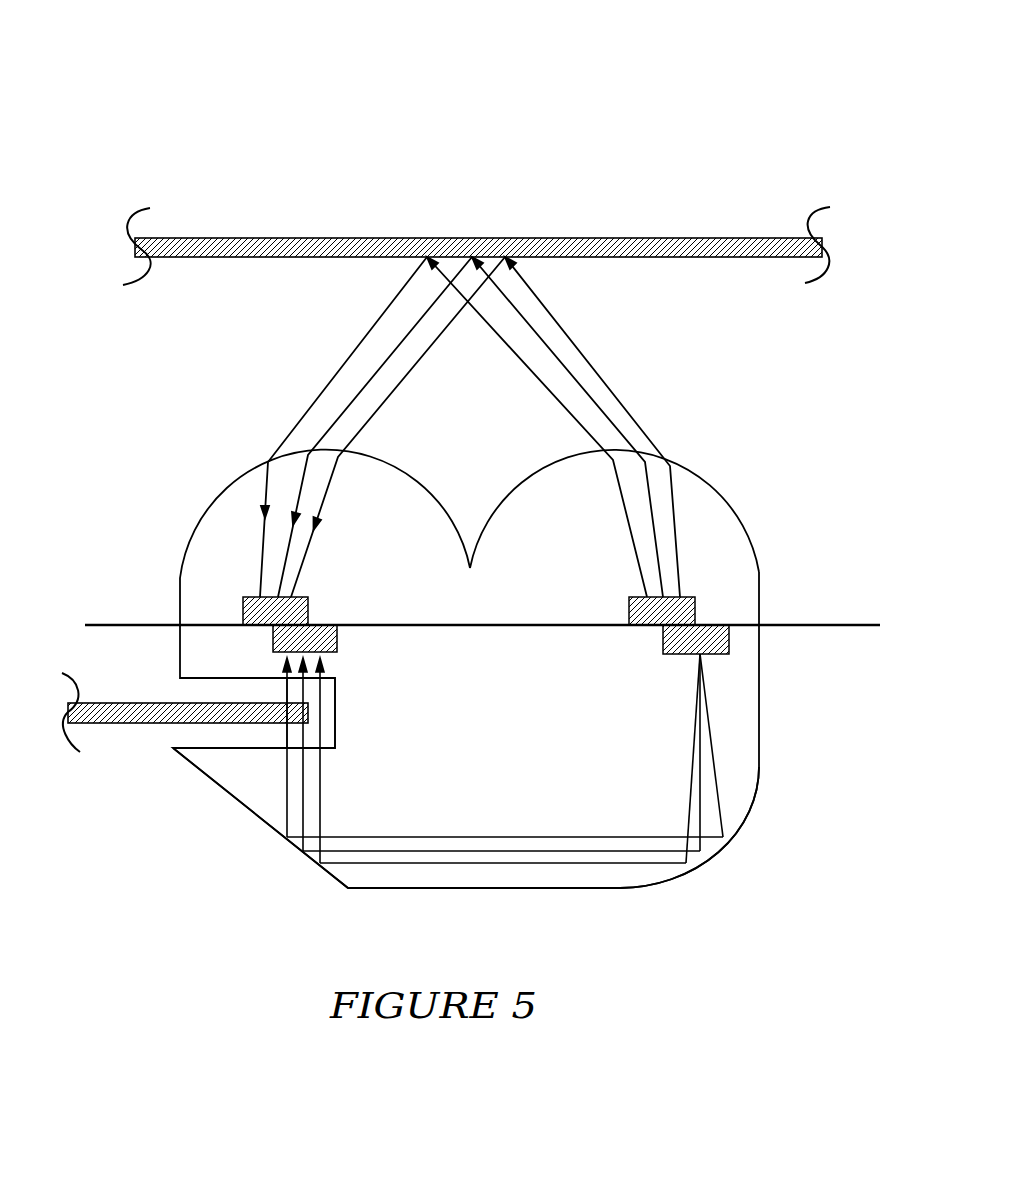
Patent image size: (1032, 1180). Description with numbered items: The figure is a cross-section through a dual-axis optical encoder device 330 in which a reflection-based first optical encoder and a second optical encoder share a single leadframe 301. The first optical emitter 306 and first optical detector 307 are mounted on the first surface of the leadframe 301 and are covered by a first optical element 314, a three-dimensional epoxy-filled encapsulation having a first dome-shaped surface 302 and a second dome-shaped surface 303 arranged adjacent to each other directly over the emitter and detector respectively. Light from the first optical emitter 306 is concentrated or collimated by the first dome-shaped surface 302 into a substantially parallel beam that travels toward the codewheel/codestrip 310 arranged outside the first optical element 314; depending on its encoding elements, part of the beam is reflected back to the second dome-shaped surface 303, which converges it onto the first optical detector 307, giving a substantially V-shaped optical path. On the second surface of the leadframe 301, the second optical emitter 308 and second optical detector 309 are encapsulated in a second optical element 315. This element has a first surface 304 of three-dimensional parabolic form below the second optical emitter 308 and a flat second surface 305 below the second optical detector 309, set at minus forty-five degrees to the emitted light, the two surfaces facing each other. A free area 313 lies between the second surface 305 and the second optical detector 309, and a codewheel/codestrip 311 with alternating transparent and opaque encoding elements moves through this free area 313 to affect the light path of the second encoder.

The optical encoder device 330 is at (755, 122).
The codewheel/codestrip 310 is at (652, 238).
The first optical element 314 is at (732, 555).
The second dome-shaped surface 303 is at (257, 468).
The first dome-shaped surface 302 is at (738, 508).
The leadframe 301 is at (840, 625).
The first optical detector 307 is at (258, 597).
The second optical detector 309 is at (338, 637).
The first optical emitter 306 is at (630, 605).
The second optical emitter 308 is at (663, 646).
The codewheel/codestrip 311 is at (118, 725).
The free area 313 is at (325, 712).
The second surface 305 is at (325, 878).
The second optical element 315 is at (478, 878).
The first surface 304 is at (687, 862).